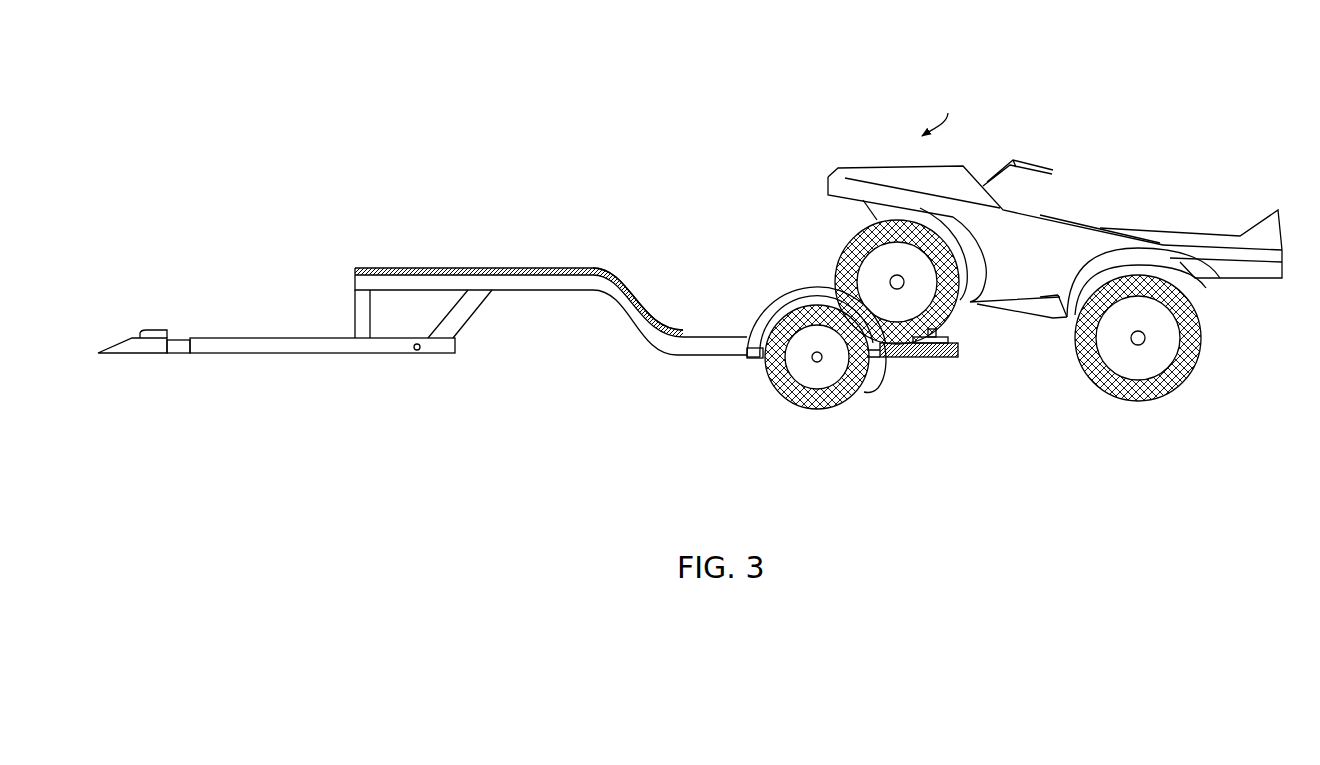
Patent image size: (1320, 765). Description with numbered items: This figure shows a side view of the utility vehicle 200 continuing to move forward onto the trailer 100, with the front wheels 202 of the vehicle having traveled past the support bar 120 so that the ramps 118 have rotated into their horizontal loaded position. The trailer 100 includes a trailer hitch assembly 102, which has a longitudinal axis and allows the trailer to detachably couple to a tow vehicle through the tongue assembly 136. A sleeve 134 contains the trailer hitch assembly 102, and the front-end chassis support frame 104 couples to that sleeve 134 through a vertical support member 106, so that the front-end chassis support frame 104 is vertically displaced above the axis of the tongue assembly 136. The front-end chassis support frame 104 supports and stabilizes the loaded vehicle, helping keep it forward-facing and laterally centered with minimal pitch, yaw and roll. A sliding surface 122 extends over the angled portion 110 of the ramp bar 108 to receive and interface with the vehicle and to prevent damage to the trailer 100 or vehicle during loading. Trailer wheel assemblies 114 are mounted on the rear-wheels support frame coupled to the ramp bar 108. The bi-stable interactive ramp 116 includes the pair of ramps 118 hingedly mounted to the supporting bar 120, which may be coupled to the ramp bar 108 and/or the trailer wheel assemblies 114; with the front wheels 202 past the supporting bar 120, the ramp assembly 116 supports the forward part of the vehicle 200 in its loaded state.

The trailer 100 is at (663, 168).
The trailer hitch assembly 102 is at (129, 361).
The front-end chassis support frame 104 is at (357, 264).
The vertical support member 106 is at (354, 320).
The ramp bar 108 is at (737, 337).
The angled portion 110 is at (623, 325).
The trailer wheel assembly 114 is at (816, 286).
The bi-stable interactive ramp 116 is at (930, 374).
The ramp 118 is at (951, 359).
The supporting bar 120 is at (921, 367).
The sliding surface 122 is at (621, 277).
The sleeve 134 is at (205, 339).
The tongue assembly 136 is at (125, 337).
The utility vehicle 200 is at (1150, 103).
The front wheels 202 is at (781, 325).